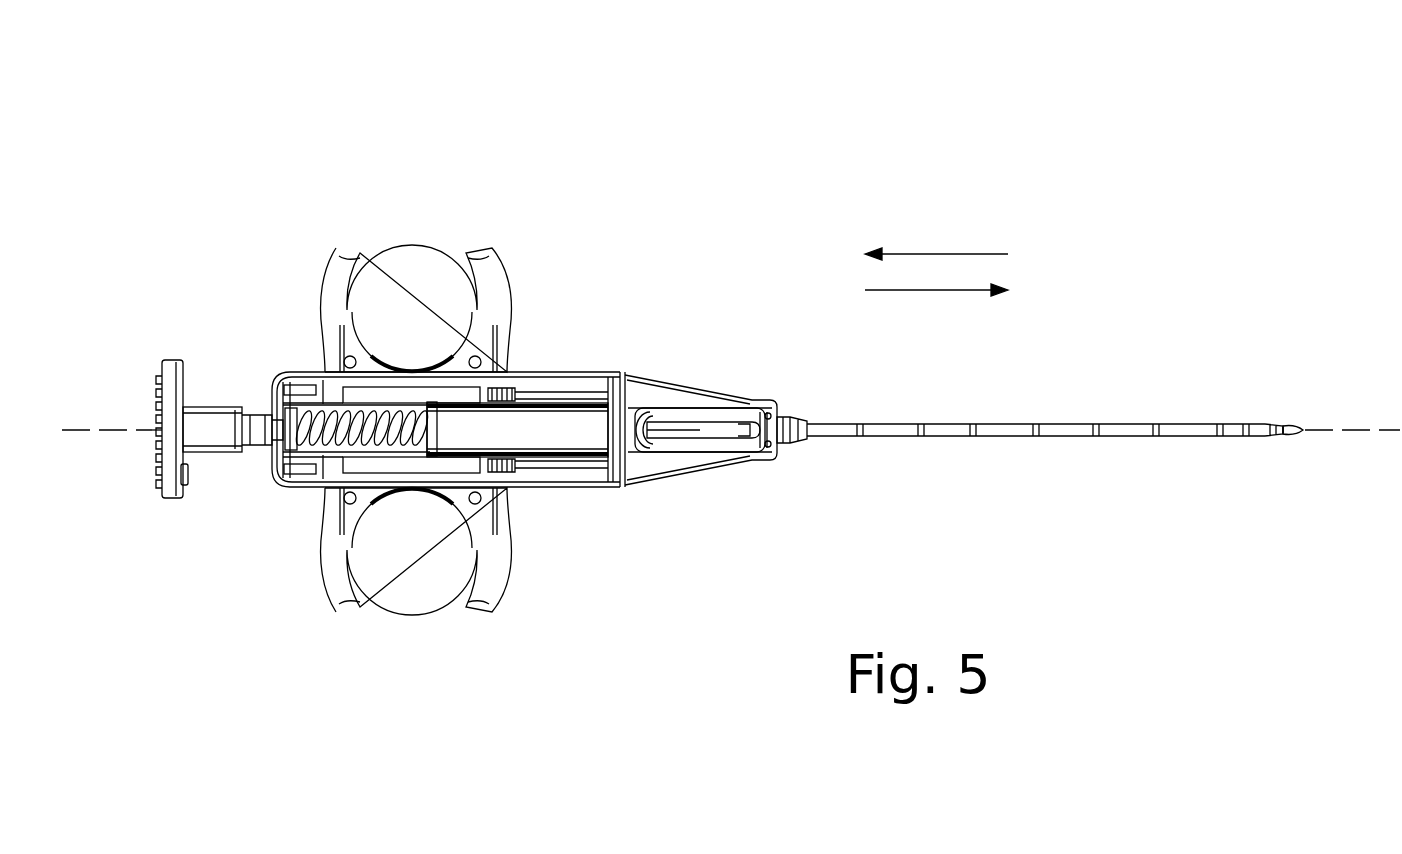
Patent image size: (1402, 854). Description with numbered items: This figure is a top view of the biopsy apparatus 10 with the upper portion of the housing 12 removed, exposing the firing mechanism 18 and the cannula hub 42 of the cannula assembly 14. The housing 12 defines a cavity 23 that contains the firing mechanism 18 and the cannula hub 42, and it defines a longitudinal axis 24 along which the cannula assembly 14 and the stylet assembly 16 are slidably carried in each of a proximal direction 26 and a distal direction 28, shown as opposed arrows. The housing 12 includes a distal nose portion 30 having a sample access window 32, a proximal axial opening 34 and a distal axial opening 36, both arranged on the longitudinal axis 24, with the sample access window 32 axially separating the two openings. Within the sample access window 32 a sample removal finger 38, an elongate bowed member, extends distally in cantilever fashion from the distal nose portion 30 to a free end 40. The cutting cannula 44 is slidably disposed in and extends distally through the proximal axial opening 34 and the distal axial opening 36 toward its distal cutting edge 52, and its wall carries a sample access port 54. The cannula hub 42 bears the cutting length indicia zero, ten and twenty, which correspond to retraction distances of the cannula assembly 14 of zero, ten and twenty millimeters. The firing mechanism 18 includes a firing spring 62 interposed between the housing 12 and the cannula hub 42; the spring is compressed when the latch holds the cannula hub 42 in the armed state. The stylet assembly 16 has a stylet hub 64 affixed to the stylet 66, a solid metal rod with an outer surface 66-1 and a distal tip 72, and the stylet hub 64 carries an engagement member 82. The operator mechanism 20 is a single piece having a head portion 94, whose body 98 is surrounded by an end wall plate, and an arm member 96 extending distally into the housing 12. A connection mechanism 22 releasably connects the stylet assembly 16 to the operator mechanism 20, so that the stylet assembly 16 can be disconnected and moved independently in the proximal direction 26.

The biopsy apparatus 10 is at (562, 474).
The housing 12 is at (428, 517).
The cannula assembly 14 is at (778, 412).
The stylet assembly 16 is at (110, 420).
The firing mechanism 18 is at (337, 396).
The operator mechanism 20 is at (203, 447).
The connection mechanism 22 is at (216, 476).
The cavity 23 is at (288, 386).
The longitudinal axis 24 is at (107, 431).
The proximal direction 26 is at (957, 253).
The distal direction 28 is at (923, 290).
The distal nose portion 30 is at (667, 378).
The sample access window 32 is at (698, 402).
The proximal axial opening 34 is at (665, 430).
The distal axial opening 36 is at (810, 440).
The sample removal finger 38 is at (690, 432).
The free end 40 is at (710, 428).
The cannula hub 42 is at (528, 405).
The cutting cannula 44 is at (1005, 422).
The distal cutting edge 52 is at (1280, 437).
The sample access port 54 is at (724, 410).
The firing spring 62 is at (387, 415).
The stylet hub 64 is at (138, 449).
The stylet 66 is at (1282, 425).
The outer surface 66-1 is at (735, 425).
The distal tip 72 is at (1300, 430).
The engagement member 82 is at (187, 474).
The head portion 94 is at (253, 470).
The arm member 96 is at (270, 410).
The body 98 is at (213, 455).